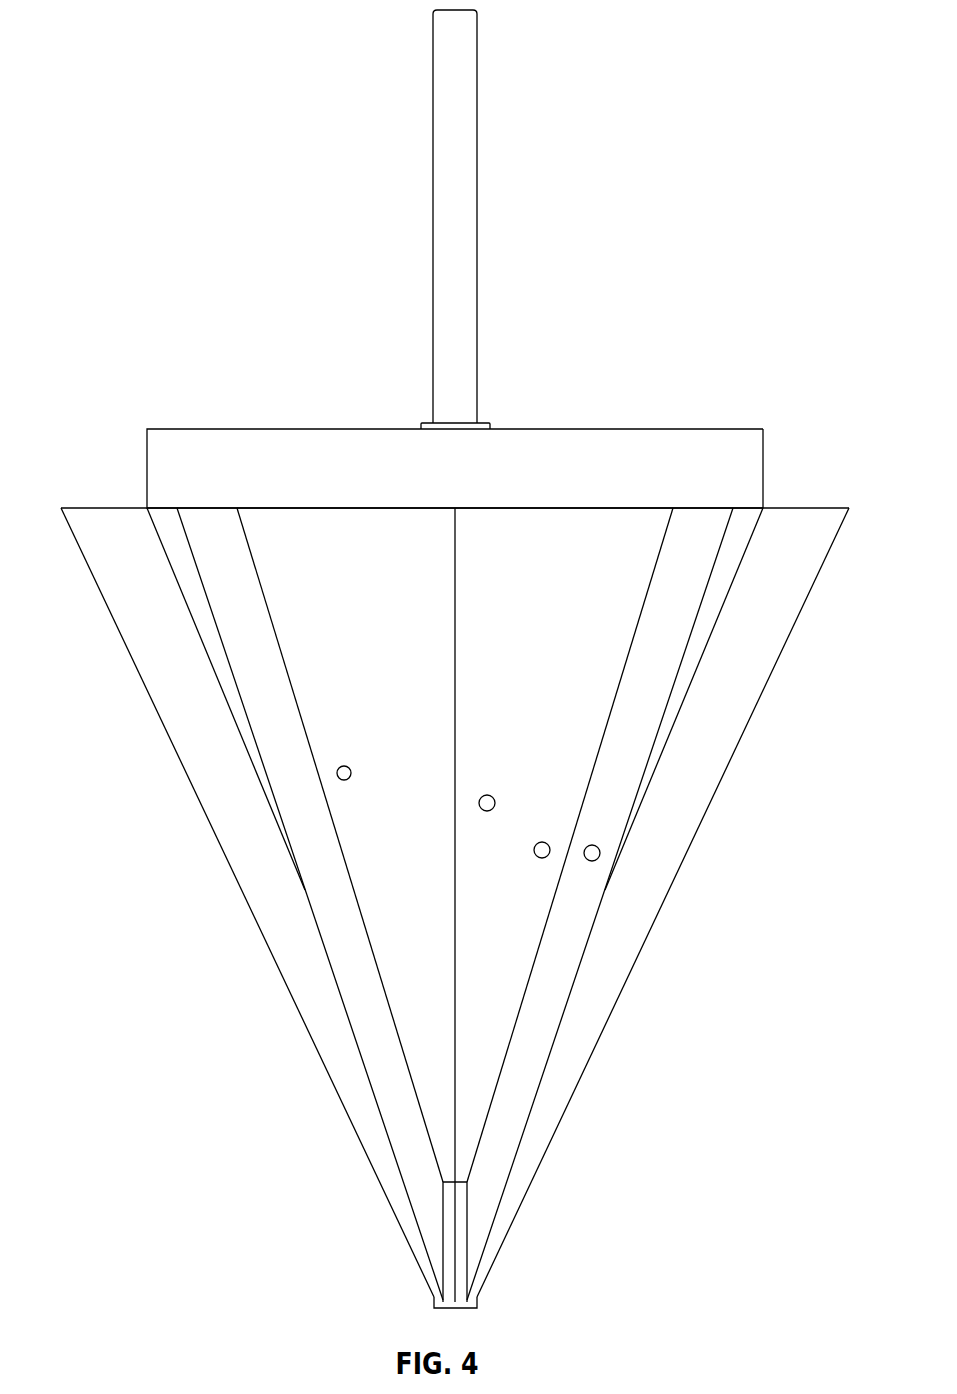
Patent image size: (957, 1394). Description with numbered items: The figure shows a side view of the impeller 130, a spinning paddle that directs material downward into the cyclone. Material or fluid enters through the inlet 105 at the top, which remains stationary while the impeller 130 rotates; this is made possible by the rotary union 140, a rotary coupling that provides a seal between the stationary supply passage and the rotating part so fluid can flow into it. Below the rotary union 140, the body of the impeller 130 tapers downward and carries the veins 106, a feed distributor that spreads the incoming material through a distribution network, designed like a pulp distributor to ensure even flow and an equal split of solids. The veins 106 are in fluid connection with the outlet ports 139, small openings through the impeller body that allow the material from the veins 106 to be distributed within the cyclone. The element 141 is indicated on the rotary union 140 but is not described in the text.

The inlet 105 is at (434, 118).
The veins 106 is at (376, 662).
The impeller 130 is at (770, 370).
The outlet ports 139 is at (351, 767).
The rotary union 140 is at (582, 446).
The plate edge 141 is at (755, 470).